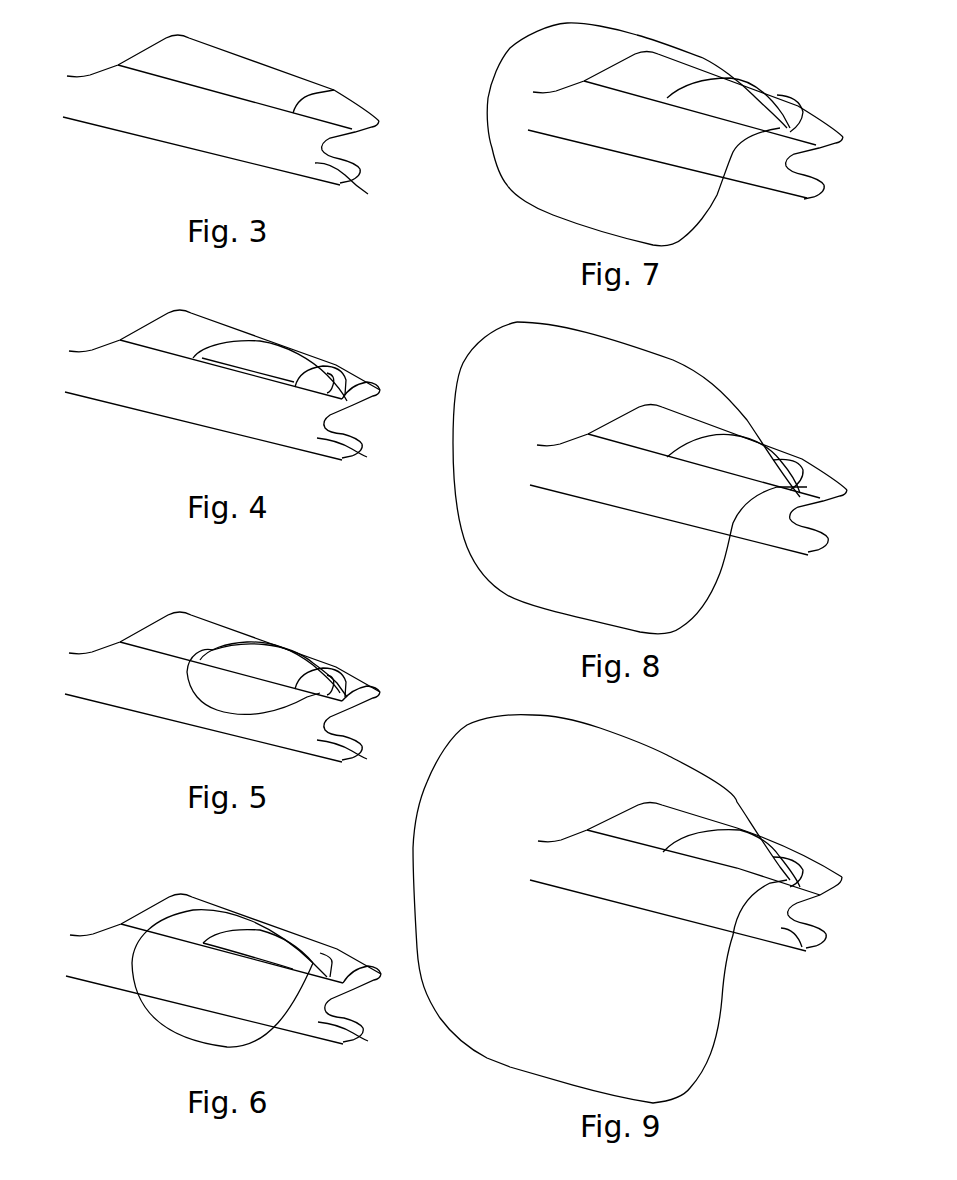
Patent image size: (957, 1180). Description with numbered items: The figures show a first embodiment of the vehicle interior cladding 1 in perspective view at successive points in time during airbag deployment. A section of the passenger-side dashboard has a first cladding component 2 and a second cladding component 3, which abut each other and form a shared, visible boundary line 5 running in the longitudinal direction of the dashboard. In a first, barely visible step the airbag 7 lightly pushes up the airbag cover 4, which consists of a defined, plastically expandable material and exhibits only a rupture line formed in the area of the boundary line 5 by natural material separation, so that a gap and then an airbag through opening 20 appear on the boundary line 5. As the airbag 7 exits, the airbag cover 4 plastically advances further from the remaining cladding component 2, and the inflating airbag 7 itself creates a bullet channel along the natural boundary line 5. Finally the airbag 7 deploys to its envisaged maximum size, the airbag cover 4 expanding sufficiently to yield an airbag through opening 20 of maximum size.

In FIG. 3, the vehicle interior cladding 1 is at (254, 110).
In FIG. 3, the first cladding component 2 is at (261, 77).
In FIG. 4, the first cladding component 2 is at (224, 338).
In FIG. 5, the first cladding component 2 is at (224, 636).
In FIG. 6, the first cladding component 2 is at (225, 912).
In FIG. 7, the first cladding component 2 is at (688, 99).
In FIG. 8, the first cladding component 2 is at (692, 452).
In FIG. 9, the first cladding component 2 is at (693, 840).
In FIG. 3, the second cladding component 3 is at (368, 194).
In FIG. 4, the second cladding component 3 is at (231, 427).
In FIG. 5, the second cladding component 3 is at (230, 729).
In FIG. 6, the second cladding component 3 is at (232, 1012).
In FIG. 7, the second cladding component 3 is at (685, 164).
In FIG. 8, the second cladding component 3 is at (688, 520).
In FIG. 9, the second cladding component 3 is at (686, 952).
In FIG. 4, the airbag cover 4 is at (270, 352).
In FIG. 5, the airbag cover 4 is at (270, 640).
In FIG. 6, the airbag cover 4 is at (285, 930).
In FIG. 3, the boundary line 5 is at (334, 90).
In FIG. 4, the boundary line 5 is at (371, 371).
In FIG. 5, the boundary line 5 is at (373, 673).
In FIG. 5, the airbag 7 is at (262, 708).
In FIG. 6, the airbag 7 is at (222, 1000).
In FIG. 7, the airbag 7 is at (637, 140).
In FIG. 8, the airbag 7 is at (630, 478).
In FIG. 9, the airbag 7 is at (601, 914).
In FIG. 4, the airbag through opening 20 is at (333, 357).
In FIG. 5, the airbag through opening 20 is at (329, 656).
In FIG. 6, the airbag through opening 20 is at (267, 953).
In FIG. 7, the airbag through opening 20 is at (740, 80).
In FIG. 8, the airbag through opening 20 is at (739, 439).
In FIG. 9, the airbag through opening 20 is at (733, 831).